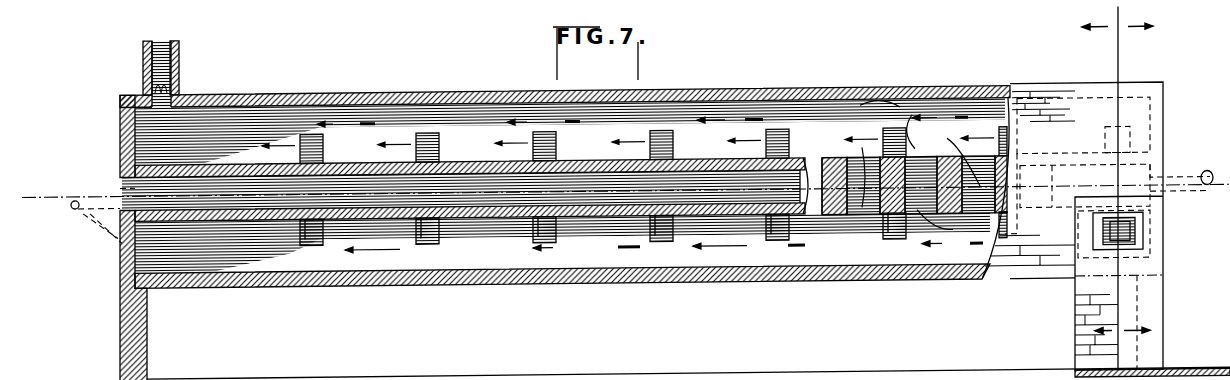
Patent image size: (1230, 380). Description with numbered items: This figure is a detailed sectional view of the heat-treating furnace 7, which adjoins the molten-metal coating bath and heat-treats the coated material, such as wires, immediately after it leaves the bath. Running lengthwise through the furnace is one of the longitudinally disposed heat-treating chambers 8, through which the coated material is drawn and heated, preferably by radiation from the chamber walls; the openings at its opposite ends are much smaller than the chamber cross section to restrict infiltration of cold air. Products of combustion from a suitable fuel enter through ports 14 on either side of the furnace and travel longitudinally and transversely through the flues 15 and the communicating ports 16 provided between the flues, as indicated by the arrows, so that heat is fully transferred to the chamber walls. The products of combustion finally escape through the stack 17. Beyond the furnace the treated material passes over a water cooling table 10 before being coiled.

The heat-treating furnace 7 is at (409, 93).
The heat-treating chamber 8 is at (503, 196).
The water cooling table 10 is at (1117, 185).
The port 14 is at (1125, 242).
The flue 15 is at (678, 258).
The communicating port 16 is at (787, 140).
The stack 17 is at (168, 61).